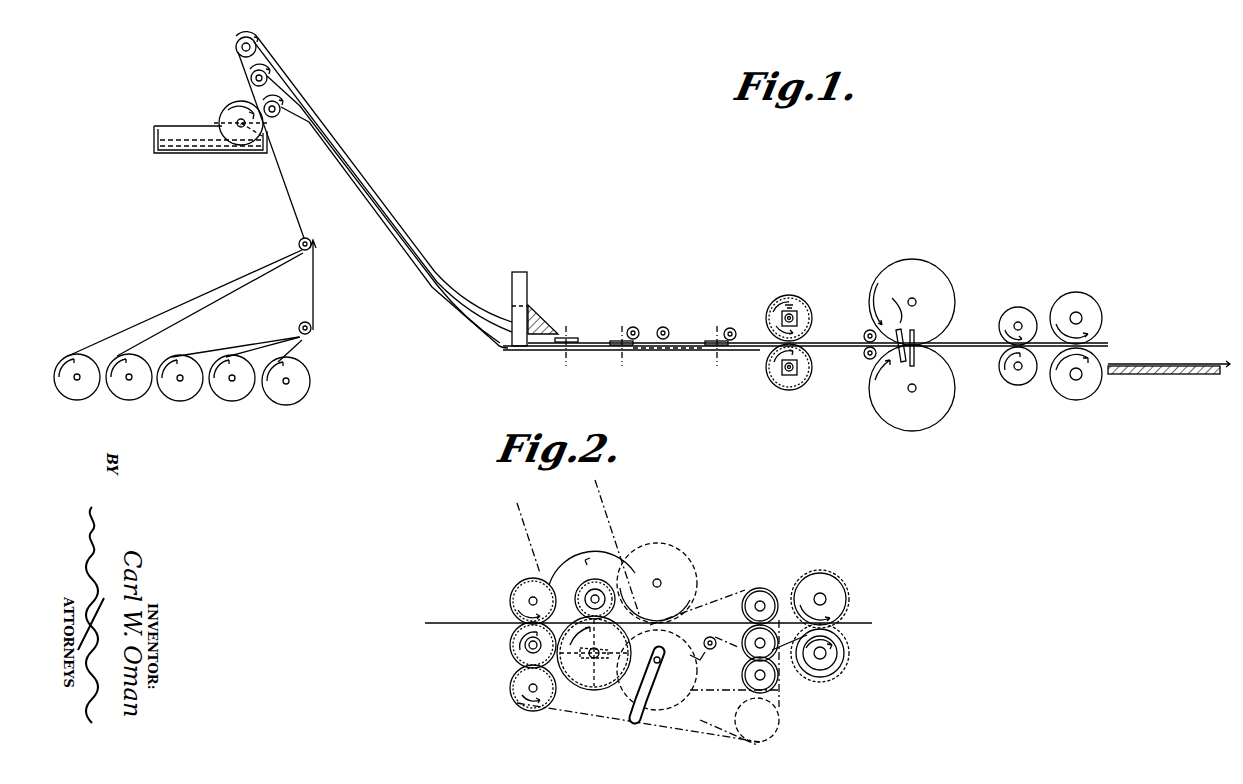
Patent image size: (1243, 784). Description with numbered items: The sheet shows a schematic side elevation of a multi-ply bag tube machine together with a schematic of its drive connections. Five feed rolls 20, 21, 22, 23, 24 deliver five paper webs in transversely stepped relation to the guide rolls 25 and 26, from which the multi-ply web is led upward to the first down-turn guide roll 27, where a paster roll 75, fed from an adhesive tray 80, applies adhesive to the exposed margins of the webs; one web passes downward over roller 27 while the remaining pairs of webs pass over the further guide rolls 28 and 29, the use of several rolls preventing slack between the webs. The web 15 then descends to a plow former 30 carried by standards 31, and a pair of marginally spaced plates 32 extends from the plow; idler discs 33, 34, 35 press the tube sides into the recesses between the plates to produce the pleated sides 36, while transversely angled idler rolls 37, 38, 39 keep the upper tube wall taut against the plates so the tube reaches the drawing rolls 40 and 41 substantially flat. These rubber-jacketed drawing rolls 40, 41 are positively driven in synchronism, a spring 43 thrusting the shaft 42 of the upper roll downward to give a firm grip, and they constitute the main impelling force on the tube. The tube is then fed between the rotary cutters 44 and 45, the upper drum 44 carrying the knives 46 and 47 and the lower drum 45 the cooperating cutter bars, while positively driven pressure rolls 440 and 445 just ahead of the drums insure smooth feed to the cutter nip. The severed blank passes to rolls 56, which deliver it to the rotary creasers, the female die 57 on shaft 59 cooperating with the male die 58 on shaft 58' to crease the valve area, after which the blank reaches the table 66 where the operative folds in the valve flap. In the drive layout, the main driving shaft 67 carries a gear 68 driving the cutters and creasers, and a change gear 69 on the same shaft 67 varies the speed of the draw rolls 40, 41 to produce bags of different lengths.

In FIG. 1, the web of material 15 is at (352, 178).
In FIG. 2, the web of material 15 is at (648, 612).
In FIG. 1, the feed roll 20 is at (80, 399).
In FIG. 1, the feed roll 21 is at (132, 399).
In FIG. 1, the feed roll 22 is at (183, 400).
In FIG. 1, the feed roll 23 is at (235, 400).
In FIG. 1, the feed roll 24 is at (289, 404).
In FIG. 1, the guide roll 25 is at (303, 322).
In FIG. 1, the guide roll 26 is at (298, 244).
In FIG. 1, the first down-turn guide roll 27 is at (281, 118).
In FIG. 1, the guide roll 28 is at (251, 78).
In FIG. 1, the guide roll 29 is at (236, 47).
In FIG. 1, the plow former 30 is at (563, 331).
In FIG. 1, the standards 31 is at (540, 315).
In FIG. 1, the marginally spaced plates 32 is at (504, 352).
In FIG. 1, the idler disc 33 is at (558, 350).
In FIG. 1, the idler disc 34 is at (618, 350).
In FIG. 1, the idler disc 35 is at (712, 350).
In FIG. 1, the pleated sides 36 is at (663, 350).
In FIG. 1, the transversely angled idler roll 37 is at (636, 326).
In FIG. 1, the transversely angled idler roll 38 is at (666, 326).
In FIG. 1, the transversely angled idler roll 39 is at (731, 327).
In FIG. 1, the drawing roll 40 is at (792, 392).
In FIG. 2, the drawing roll 40 is at (510, 646).
In FIG. 1, the drawing roll 41 is at (783, 297).
In FIG. 2, the drawing roll 41 is at (512, 601).
In FIG. 1, the shaft 42 is at (800, 318).
In FIG. 2, the shaft 42 is at (530, 597).
In FIG. 1, the spring 43 is at (797, 305).
In FIG. 1, the upper cutter drum 44 is at (933, 275).
In FIG. 2, the upper cutter drum 44 is at (688, 570).
In FIG. 1, the lower cutter drum 45 is at (916, 430).
In FIG. 2, the lower cutter drum 45 is at (680, 695).
In FIG. 1, the knife 46 is at (915, 332).
In FIG. 1, the knife 47 is at (896, 318).
In FIG. 1, the rolls 56 is at (1014, 383).
In FIG. 2, the rolls 56 is at (766, 592).
In FIG. 1, the lower creaser die 57 is at (1098, 388).
In FIG. 2, the lower creaser die 57 is at (845, 670).
In FIG. 1, the male creaser die 58 is at (1095, 318).
In FIG. 2, the male creaser die 58 is at (837, 599).
In FIG. 1, the shaft 58' is at (1070, 296).
In FIG. 2, the shaft 58' is at (812, 576).
In FIG. 1, the shaft 59 is at (1076, 380).
In FIG. 2, the shaft 59 is at (826, 652).
In FIG. 1, the table 66 is at (1185, 375).
In FIG. 2, the main driving shaft 67 is at (598, 592).
In FIG. 2, the gear 68 is at (580, 580).
In FIG. 2, the change gear 69 is at (580, 598).
In FIG. 1, the paster roll 75 is at (221, 112).
In FIG. 1, the adhesive tray 80 is at (164, 124).
In FIG. 1, the positively driven roll 440 is at (866, 327).
In FIG. 1, the positively driven roll 445 is at (866, 360).